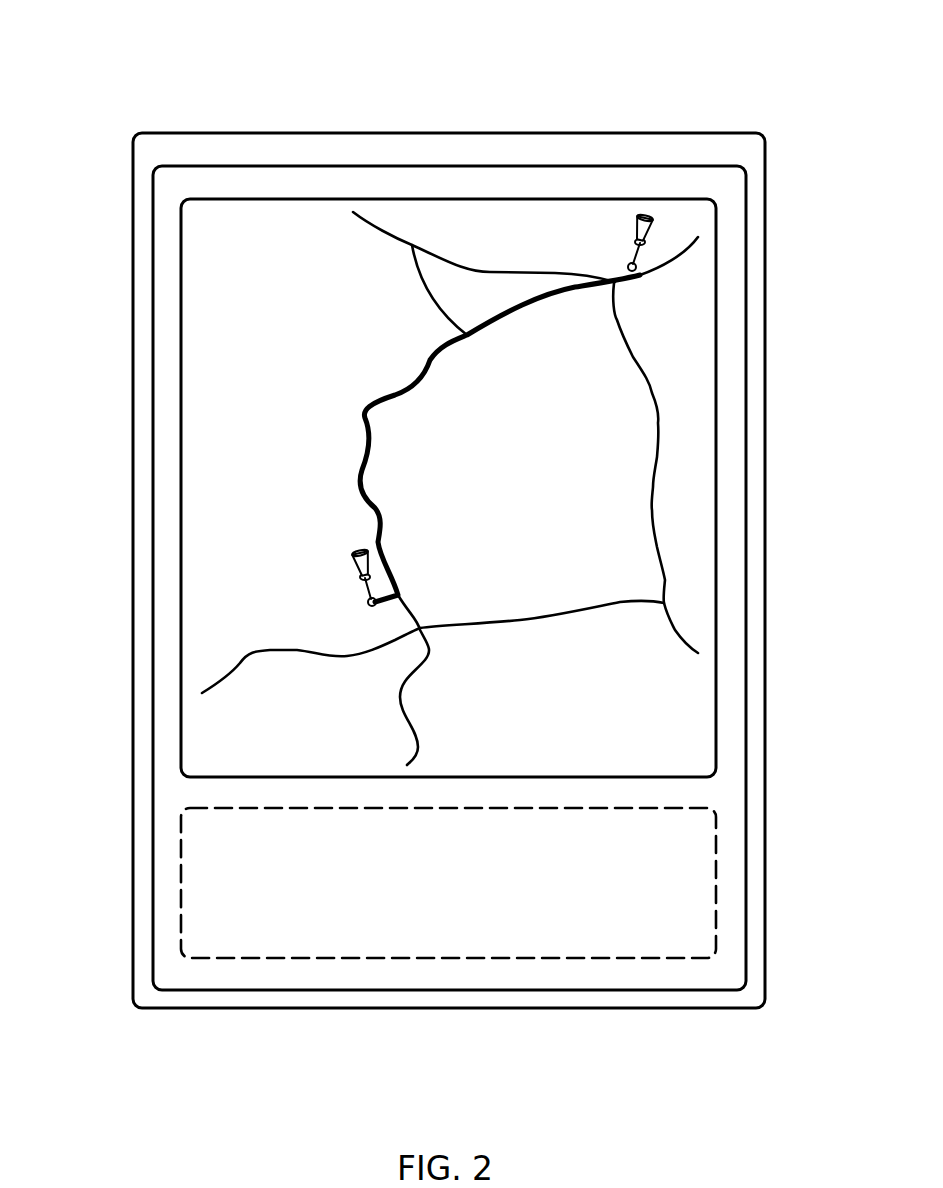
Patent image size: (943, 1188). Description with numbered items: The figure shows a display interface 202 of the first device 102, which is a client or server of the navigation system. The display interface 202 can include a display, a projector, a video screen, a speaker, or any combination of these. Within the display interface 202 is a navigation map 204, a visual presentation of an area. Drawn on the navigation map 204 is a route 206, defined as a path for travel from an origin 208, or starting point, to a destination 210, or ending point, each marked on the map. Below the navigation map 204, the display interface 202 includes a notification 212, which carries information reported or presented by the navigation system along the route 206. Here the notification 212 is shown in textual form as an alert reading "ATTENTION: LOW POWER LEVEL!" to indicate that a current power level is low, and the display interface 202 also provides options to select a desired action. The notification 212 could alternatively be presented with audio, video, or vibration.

The first device 102 is at (147, 67).
The display interface 202 is at (743, 1035).
The navigation map 204 is at (794, 199).
The route 206 is at (358, 408).
The origin 208 is at (368, 603).
The destination 210 is at (630, 264).
The notification 212 is at (116, 808).